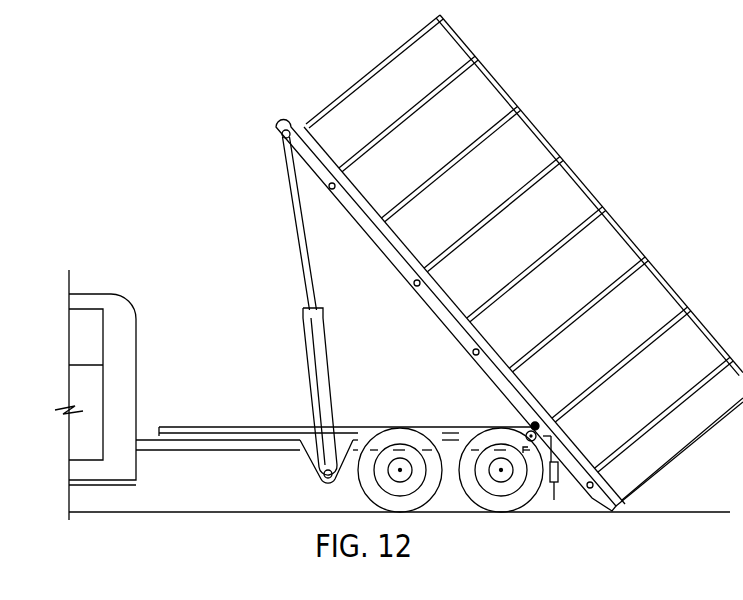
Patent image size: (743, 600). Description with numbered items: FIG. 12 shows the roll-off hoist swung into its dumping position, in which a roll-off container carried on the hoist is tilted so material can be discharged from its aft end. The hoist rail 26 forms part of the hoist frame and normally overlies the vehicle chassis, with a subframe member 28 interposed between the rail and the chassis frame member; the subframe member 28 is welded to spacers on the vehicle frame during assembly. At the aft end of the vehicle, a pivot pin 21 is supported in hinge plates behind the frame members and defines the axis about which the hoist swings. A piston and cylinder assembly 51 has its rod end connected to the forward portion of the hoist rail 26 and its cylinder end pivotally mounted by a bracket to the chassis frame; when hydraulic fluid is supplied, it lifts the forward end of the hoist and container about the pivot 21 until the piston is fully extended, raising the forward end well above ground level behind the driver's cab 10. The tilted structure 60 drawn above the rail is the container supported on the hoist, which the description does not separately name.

The driver's cab 10 is at (113, 293).
The pivot pin 21 is at (523, 425).
The hoist rail 26 is at (473, 352).
The subframe member 28 is at (208, 427).
The piston and cylinder assembly 51 is at (304, 348).
The dump body 60 is at (578, 172).